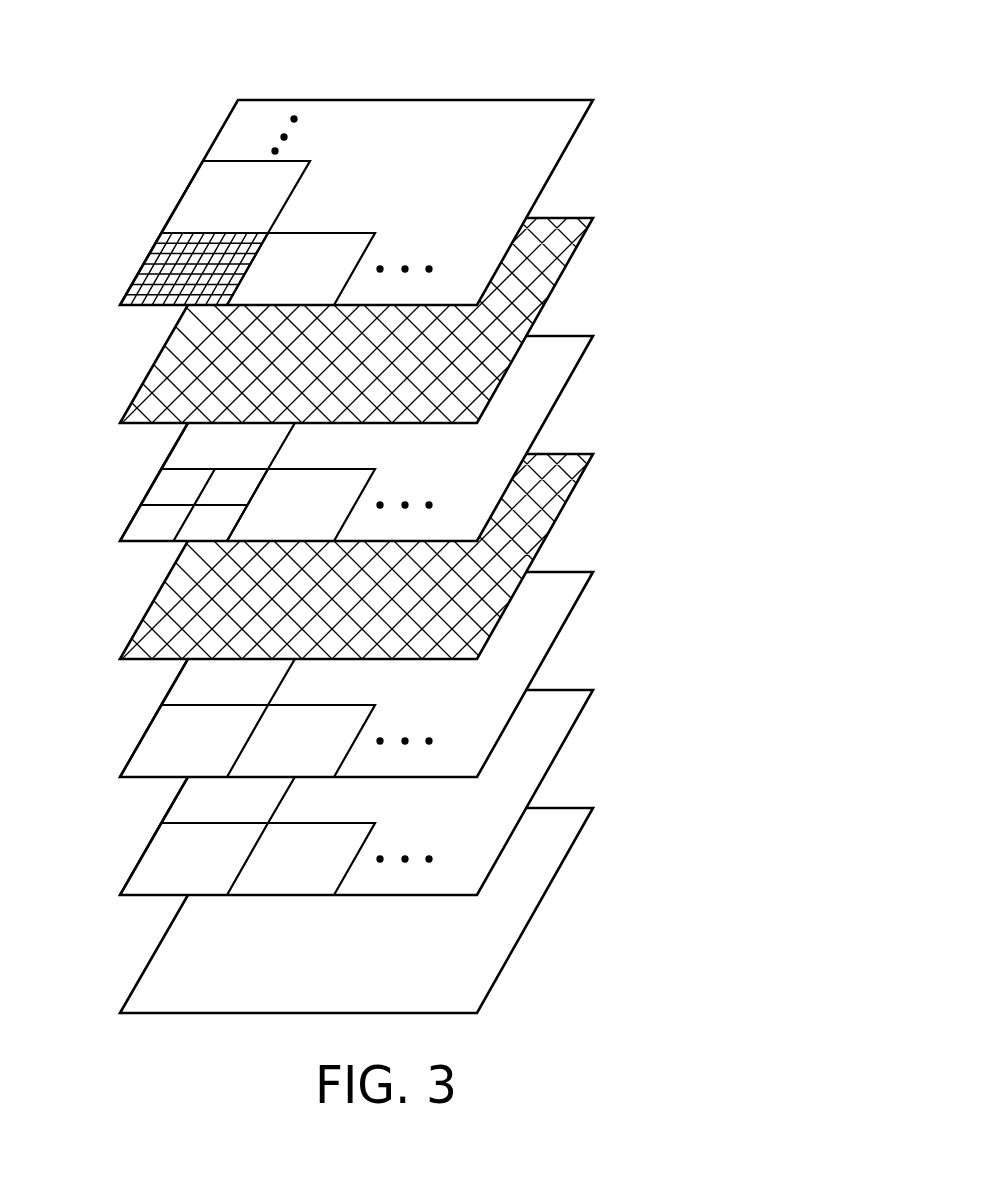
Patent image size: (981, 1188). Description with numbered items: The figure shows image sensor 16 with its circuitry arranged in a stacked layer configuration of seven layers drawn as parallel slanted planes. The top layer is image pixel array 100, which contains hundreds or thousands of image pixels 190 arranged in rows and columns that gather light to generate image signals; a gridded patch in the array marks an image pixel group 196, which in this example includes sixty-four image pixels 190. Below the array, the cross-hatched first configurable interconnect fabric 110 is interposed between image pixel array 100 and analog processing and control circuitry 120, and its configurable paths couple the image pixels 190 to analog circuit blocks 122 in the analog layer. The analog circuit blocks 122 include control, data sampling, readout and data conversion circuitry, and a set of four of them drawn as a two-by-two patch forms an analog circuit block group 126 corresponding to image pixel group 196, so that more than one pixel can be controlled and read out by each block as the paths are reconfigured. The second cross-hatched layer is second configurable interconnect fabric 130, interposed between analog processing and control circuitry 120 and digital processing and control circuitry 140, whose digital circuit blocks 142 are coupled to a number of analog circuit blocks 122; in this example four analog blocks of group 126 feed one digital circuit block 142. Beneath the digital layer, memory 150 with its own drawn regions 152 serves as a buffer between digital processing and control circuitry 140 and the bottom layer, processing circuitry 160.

The image sensor 16 is at (133, 78).
The image pixel array 100 is at (354, 186).
The first configurable interconnect fabric 110 is at (571, 221).
The analog processing and control circuitry 120 is at (354, 422).
The analog circuit blocks 122 is at (233, 483).
The analog circuit block group 126 is at (138, 470).
The second configurable interconnect fabric 130 is at (571, 457).
The digital processing and control circuitry 140 is at (346, 658).
The digital circuit blocks 142 is at (168, 742).
The memory 150 is at (346, 776).
The regions of sixth layer 152 is at (168, 860).
The processing circuitry 160 is at (571, 811).
The image pixels 190 is at (245, 240).
The image pixel group 196 is at (138, 233).